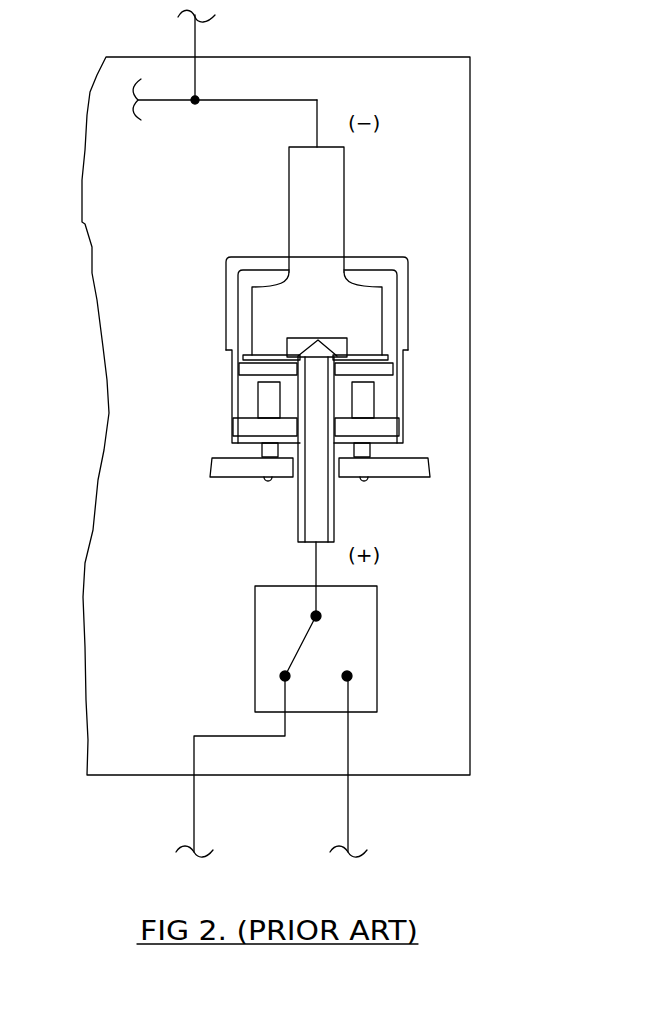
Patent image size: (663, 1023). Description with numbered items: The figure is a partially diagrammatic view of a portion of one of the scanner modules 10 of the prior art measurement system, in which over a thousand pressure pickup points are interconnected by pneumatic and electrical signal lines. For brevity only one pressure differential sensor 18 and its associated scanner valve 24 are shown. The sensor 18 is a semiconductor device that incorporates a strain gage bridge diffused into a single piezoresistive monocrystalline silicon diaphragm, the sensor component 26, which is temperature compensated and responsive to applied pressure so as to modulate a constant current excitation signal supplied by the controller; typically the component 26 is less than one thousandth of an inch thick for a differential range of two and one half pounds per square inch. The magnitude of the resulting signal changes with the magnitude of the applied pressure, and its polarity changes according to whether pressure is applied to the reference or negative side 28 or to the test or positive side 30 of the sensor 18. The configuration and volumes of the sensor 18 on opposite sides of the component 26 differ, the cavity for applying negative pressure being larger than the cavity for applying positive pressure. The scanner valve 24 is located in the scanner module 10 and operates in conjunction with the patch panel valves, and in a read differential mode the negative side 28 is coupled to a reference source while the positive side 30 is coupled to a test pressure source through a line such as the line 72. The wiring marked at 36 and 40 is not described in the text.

The scanner module 10 is at (471, 179).
The pressure differential sensor 18 is at (289, 243).
The scanner valve 24 is at (255, 640).
The sensor component 26 is at (318, 340).
The negative side 28 is at (336, 338).
The positive side 30 is at (318, 340).
The negative supply wire 36 is at (283, 100).
The switch wire 40 is at (194, 797).
The test pressure line 72 is at (348, 793).